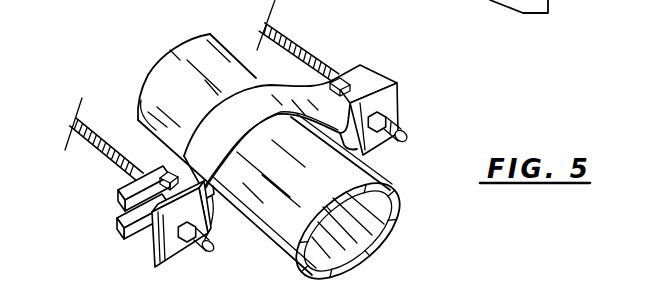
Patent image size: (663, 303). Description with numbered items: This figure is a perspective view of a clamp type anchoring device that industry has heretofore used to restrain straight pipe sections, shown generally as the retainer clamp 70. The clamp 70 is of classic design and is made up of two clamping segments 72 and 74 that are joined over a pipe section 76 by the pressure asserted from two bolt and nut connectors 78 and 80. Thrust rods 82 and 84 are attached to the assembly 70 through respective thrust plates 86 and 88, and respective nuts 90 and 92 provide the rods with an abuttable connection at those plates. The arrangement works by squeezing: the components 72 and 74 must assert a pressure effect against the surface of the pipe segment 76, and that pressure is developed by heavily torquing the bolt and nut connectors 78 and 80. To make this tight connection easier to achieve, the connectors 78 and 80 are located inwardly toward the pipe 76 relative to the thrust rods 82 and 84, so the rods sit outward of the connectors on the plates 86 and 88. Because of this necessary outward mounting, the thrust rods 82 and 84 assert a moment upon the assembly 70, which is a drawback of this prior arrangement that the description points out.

The retainer clamp 70 is at (265, 151).
The clamping segment 72 is at (183, 159).
The clamping segment 74 is at (130, 236).
The pipe section 76 is at (383, 184).
The bolt and nut connector 78 is at (122, 203).
The bolt and nut connector 80 is at (339, 87).
The thrust rod 82 is at (98, 165).
The thrust rod 84 is at (288, 44).
The thrust plate 86 is at (179, 266).
The thrust plate 88 is at (395, 104).
The nut 90 is at (196, 252).
The nut 92 is at (400, 127).